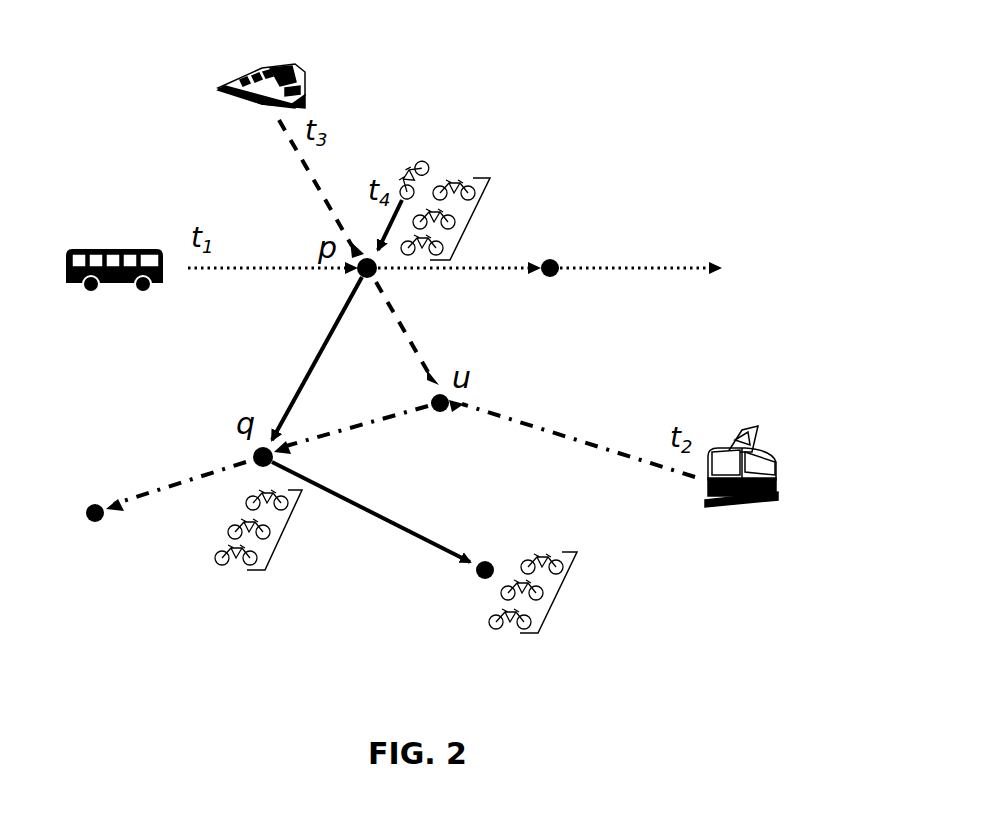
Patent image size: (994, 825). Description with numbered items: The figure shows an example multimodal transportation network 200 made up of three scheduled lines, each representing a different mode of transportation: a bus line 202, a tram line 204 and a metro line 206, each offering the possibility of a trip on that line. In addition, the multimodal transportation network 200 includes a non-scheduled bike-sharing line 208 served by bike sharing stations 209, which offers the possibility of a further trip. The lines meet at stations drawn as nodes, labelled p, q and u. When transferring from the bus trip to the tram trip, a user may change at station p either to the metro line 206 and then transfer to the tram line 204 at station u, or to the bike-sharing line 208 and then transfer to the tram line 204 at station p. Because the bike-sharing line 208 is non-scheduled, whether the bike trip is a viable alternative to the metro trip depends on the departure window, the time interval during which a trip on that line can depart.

The multimodal transportation network 200 is at (620, 128).
The bus line 202 is at (110, 230).
The tram line 204 is at (763, 412).
The metro line 206 is at (306, 70).
The bike-sharing line 208 is at (434, 148).
The bike sharing stations 209 is at (484, 222).